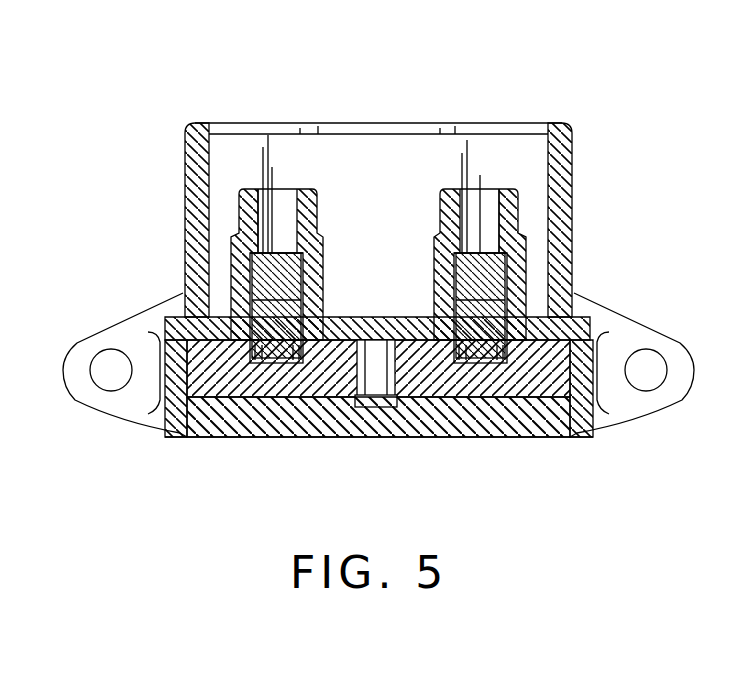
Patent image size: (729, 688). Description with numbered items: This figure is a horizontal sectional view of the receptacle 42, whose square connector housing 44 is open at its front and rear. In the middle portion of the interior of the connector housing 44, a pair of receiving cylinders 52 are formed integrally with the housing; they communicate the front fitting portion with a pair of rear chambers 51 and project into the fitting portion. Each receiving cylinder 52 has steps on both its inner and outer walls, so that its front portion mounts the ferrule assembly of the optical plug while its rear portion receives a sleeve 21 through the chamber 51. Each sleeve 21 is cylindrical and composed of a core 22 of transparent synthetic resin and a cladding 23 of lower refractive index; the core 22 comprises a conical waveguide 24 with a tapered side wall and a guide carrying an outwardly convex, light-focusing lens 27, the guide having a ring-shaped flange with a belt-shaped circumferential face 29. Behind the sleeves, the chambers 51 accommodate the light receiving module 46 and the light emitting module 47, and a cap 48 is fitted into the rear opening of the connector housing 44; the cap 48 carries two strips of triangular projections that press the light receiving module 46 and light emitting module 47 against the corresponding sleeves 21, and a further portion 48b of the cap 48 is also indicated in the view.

The sleeve 21 is at (376, 266).
The core 22 is at (245, 296).
The cladding 23 is at (250, 305).
The waveguide 24 is at (481, 255).
The lens 27 is at (285, 252).
The circumferential face 29 is at (336, 150).
The receptacle 42 is at (375, 235).
The connector housing 44 is at (183, 168).
The light receiving module 46 is at (172, 332).
The light emitting module 47 is at (590, 325).
The cap 48 is at (393, 443).
The bottom plate 48b is at (287, 420).
The chamber 51 is at (155, 405).
The receiving cylinder 52 is at (250, 188).